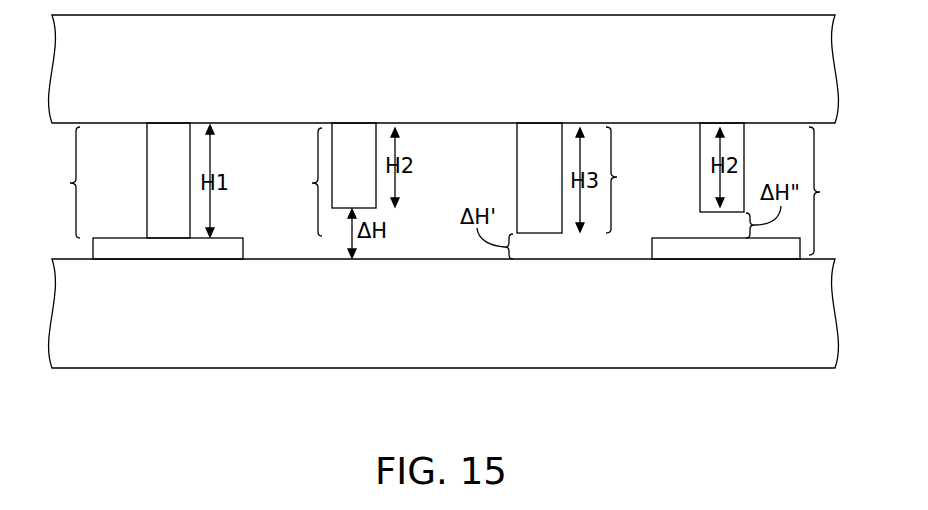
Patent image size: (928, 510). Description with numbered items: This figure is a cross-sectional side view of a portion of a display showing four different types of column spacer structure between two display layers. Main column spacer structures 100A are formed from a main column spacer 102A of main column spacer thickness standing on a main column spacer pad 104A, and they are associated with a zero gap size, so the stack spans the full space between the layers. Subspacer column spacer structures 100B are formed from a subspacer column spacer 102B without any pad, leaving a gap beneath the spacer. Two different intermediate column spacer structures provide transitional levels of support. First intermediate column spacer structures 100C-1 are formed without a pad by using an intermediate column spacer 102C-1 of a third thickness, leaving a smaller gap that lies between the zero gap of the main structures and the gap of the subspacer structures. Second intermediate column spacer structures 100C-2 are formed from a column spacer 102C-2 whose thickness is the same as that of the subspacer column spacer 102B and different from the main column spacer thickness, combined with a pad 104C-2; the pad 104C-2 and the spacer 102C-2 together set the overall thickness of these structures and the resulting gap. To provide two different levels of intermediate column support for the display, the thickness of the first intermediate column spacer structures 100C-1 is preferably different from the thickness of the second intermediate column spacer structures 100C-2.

The main column spacer structures 100A is at (44, 182).
The main column spacer 102A is at (157, 187).
The main column spacer pad 104A is at (126, 250).
The subspacer column spacer structures 100B is at (284, 182).
The subspacer column spacer 102B is at (352, 135).
The intermediate column spacer 102C-1 is at (528, 152).
The first intermediate column spacer structures 100C-1 is at (617, 177).
The column spacer 102C-2 is at (737, 145).
The second intermediate column spacer structures 100C-2 is at (855, 191).
The pad 104C-2 is at (658, 244).